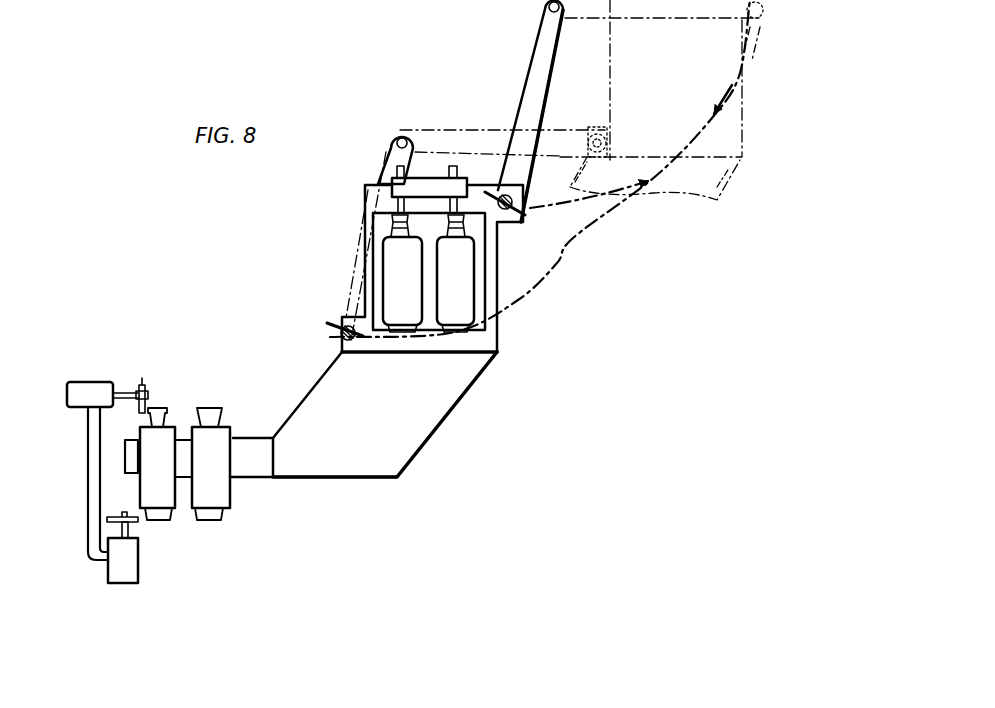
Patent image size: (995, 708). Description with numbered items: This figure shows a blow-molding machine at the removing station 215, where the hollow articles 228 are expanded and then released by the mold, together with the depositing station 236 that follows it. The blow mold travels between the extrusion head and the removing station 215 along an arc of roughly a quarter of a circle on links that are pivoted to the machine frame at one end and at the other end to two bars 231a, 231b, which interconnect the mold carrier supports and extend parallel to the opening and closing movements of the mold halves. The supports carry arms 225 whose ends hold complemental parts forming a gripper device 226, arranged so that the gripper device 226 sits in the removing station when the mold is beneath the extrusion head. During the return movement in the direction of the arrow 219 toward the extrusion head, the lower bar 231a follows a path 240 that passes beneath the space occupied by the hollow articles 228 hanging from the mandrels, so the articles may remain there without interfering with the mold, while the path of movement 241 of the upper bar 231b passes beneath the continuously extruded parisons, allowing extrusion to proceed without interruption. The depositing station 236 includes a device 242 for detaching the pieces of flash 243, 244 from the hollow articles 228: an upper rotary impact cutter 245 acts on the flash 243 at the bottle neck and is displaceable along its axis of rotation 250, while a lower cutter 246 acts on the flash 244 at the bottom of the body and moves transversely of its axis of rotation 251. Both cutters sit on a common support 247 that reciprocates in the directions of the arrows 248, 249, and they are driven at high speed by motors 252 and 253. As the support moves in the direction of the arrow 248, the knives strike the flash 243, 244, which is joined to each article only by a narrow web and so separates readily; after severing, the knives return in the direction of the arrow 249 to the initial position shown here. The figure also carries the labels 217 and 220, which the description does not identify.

The removing station 215 is at (447, 110).
The pivot block 217 is at (453, 174).
The arrow 219 is at (645, 177).
The rotation direction arrow 220 is at (712, 112).
The arms 225 is at (383, 467).
The gripper device 226 is at (122, 440).
The hollow articles 228 is at (467, 265).
The bar 231a is at (347, 355).
The upper bar 231b is at (529, 214).
The depositing station 236 is at (192, 340).
The path 240 is at (557, 265).
The path of movement 241 is at (672, 160).
The device for detaching flash 242 is at (83, 335).
The flash 243 is at (208, 408).
The flash 244 is at (212, 519).
The upper rotary impact cutter 245 is at (147, 384).
The lower rotary cutter 246 is at (130, 515).
The common support 247 is at (92, 528).
The arrow 248 is at (235, 643).
The arrow 249 is at (130, 640).
The axis of rotation 250 is at (135, 390).
The axis of rotation 251 is at (132, 530).
The motor 252 is at (95, 385).
The motor 253 is at (127, 583).